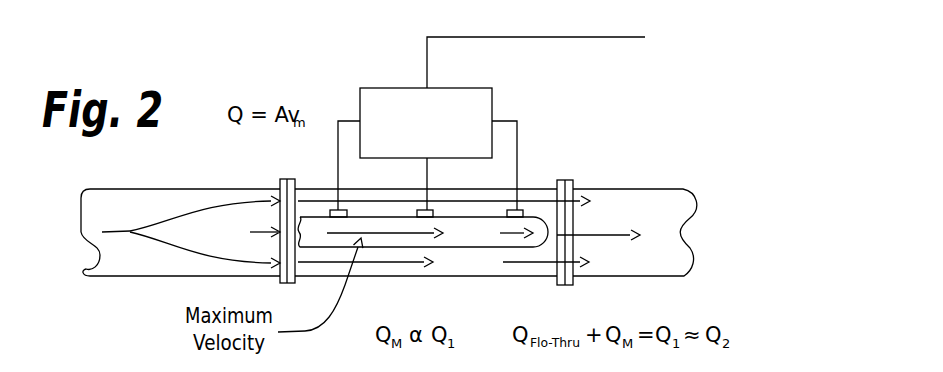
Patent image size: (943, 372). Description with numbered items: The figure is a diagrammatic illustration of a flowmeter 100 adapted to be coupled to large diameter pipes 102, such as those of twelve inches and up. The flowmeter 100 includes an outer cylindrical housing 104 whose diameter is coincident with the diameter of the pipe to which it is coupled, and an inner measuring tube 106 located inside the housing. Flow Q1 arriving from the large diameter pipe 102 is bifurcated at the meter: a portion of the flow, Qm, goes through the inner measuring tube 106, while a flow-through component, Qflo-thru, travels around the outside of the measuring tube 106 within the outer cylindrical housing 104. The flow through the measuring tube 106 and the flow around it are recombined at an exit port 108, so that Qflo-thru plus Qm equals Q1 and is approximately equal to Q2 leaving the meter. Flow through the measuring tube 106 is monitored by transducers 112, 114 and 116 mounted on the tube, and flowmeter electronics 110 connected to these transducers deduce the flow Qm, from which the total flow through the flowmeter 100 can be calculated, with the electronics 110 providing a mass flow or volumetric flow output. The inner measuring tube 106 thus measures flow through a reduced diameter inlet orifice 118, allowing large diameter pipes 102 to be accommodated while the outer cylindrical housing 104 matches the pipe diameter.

The flowmeter 100 is at (587, 132).
The large diameter pipes 102 is at (217, 188).
The outer cylindrical housing 104 is at (492, 180).
The inner measuring tube 106 is at (552, 228).
The exit port 108 is at (557, 250).
The flowmeter electronics 110 is at (457, 88).
The transducer 112 is at (430, 209).
The transducer 114 is at (340, 209).
The transducer 116 is at (523, 209).
The reduced diameter inlet orifice 118 is at (300, 187).